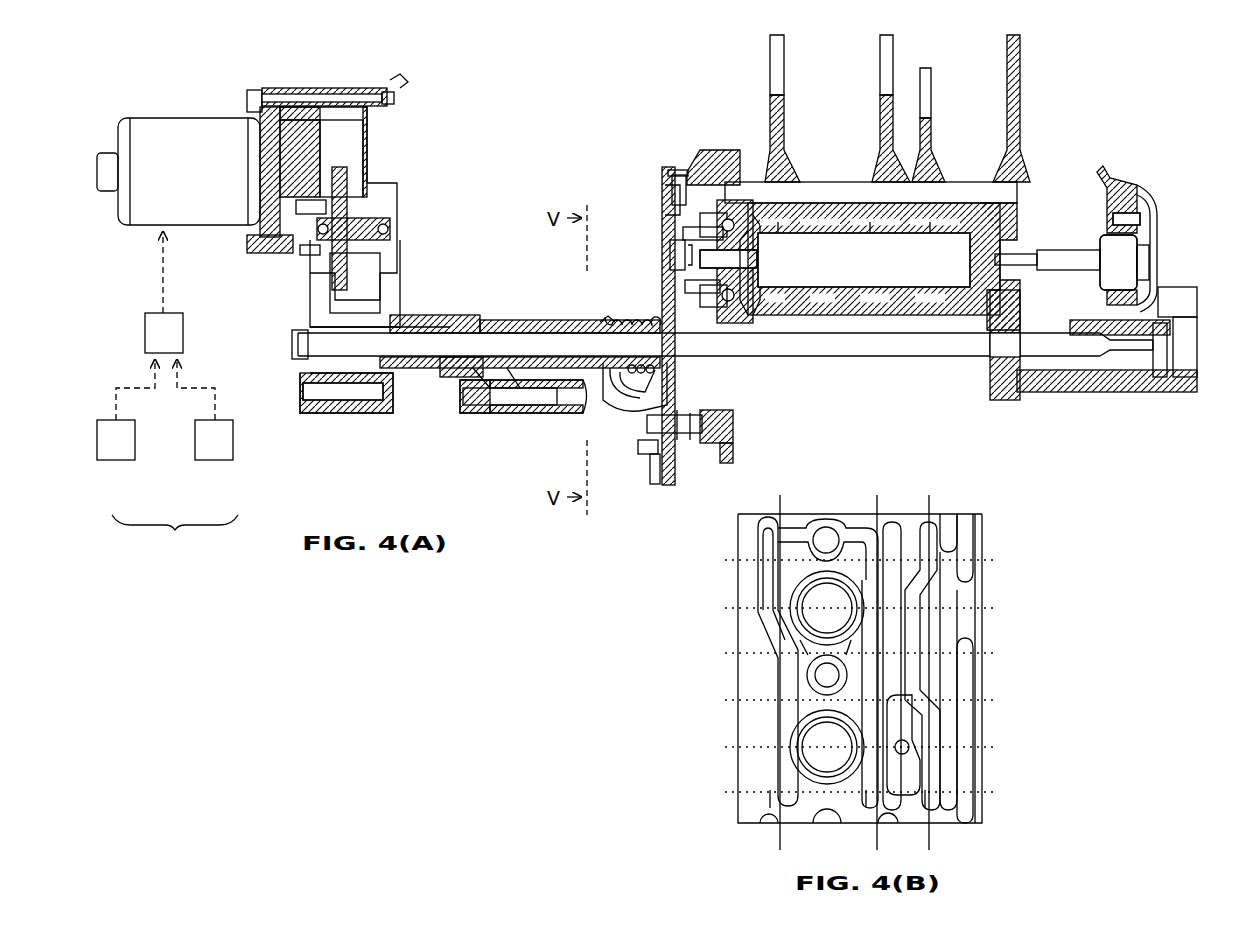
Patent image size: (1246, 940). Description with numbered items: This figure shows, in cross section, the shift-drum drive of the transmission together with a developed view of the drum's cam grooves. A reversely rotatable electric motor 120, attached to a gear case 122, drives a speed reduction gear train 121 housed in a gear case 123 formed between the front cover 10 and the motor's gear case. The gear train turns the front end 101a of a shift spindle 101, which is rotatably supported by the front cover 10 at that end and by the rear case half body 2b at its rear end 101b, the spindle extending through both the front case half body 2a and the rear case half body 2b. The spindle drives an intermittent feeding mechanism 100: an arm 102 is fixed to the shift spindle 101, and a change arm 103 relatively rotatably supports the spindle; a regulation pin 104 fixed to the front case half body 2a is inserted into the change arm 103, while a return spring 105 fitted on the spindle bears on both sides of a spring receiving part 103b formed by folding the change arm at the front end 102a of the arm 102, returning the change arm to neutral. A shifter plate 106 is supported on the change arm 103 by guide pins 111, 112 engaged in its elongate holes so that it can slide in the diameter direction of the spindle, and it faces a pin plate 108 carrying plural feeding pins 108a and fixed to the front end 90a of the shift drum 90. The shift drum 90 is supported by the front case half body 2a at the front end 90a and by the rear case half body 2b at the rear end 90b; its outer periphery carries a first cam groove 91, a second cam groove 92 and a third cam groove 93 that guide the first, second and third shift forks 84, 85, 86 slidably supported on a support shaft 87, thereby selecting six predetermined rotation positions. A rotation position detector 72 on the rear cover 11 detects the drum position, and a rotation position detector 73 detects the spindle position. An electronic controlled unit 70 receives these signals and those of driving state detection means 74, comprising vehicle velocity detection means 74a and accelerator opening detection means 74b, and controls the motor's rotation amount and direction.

In FIG. 4A, the electric motor 120 is at (190, 135).
In FIG. 4A, the gear case 122 is at (315, 88).
In FIG. 4A, the gear case 123 is at (372, 150).
In FIG. 4A, the speed reduction gear train 121 is at (360, 210).
In FIG. 4A, the front cover 10 is at (462, 316).
In FIG. 4A, the shift spindle 101 is at (918, 362).
In FIG. 4A, the front end 101a is at (445, 350).
In FIG. 4A, the rear end 101b is at (1003, 390).
In FIG. 4A, the arm 102 is at (616, 412).
In FIG. 4A, the front end 102a is at (710, 395).
In FIG. 4A, the change arm 103 is at (662, 225).
In FIG. 4A, the spring receiving part 103b is at (648, 455).
In FIG. 4A, the regulation pin 104 is at (683, 428).
In FIG. 4A, the return spring 105 is at (633, 316).
In FIG. 4A, the shifter plate 106 is at (662, 190).
In FIG. 4A, the guide pin 111 is at (672, 178).
In FIG. 4A, the guide pin 112 is at (670, 255).
In FIG. 4A, the pin plate 108 is at (708, 200).
In FIG. 4A, the feeding pins 108a is at (690, 300).
In FIG. 4A, the intermittent feeding mechanism 100 is at (637, 168).
In FIG. 4A, the front case half body 2a is at (712, 152).
In FIG. 4A, the rear case half body 2b is at (1022, 140).
In FIG. 4A, the third shift fork 86 is at (770, 112).
In FIG. 4A, the second shift fork 85 is at (880, 112).
In FIG. 4A, the first shift fork 84 is at (935, 128).
In FIG. 4A, the support shaft 87 is at (832, 182).
In FIG. 4A, the shift drum 90 is at (862, 316).
In FIG. 4B, the shift drum 90 is at (990, 603).
In FIG. 4A, the front end 90a is at (760, 300).
In FIG. 4A, the rear end 90b is at (1012, 296).
In FIG. 4A, the first cam groove 91 is at (936, 226).
In FIG. 4B, the first cam groove 91 is at (928, 808).
In FIG. 4A, the second cam groove 92 is at (876, 226).
In FIG. 4B, the second cam groove 92 is at (866, 808).
In FIG. 4A, the third cam groove 93 is at (780, 226).
In FIG. 4B, the third cam groove 93 is at (770, 808).
In FIG. 4A, the rear cover 11 is at (1138, 192).
In FIG. 4A, the rotation position detector 72 is at (1125, 253).
In FIG. 4A, the rotation position detector 73 is at (1180, 353).
In FIG. 4A, the electronic controlled unit 70 is at (145, 325).
In FIG. 4A, the vehicle velocity detection means 74a is at (125, 460).
In FIG. 4A, the accelerator opening detection means 74b is at (208, 460).
In FIG. 4A, the driving state detection means 74 is at (175, 535).